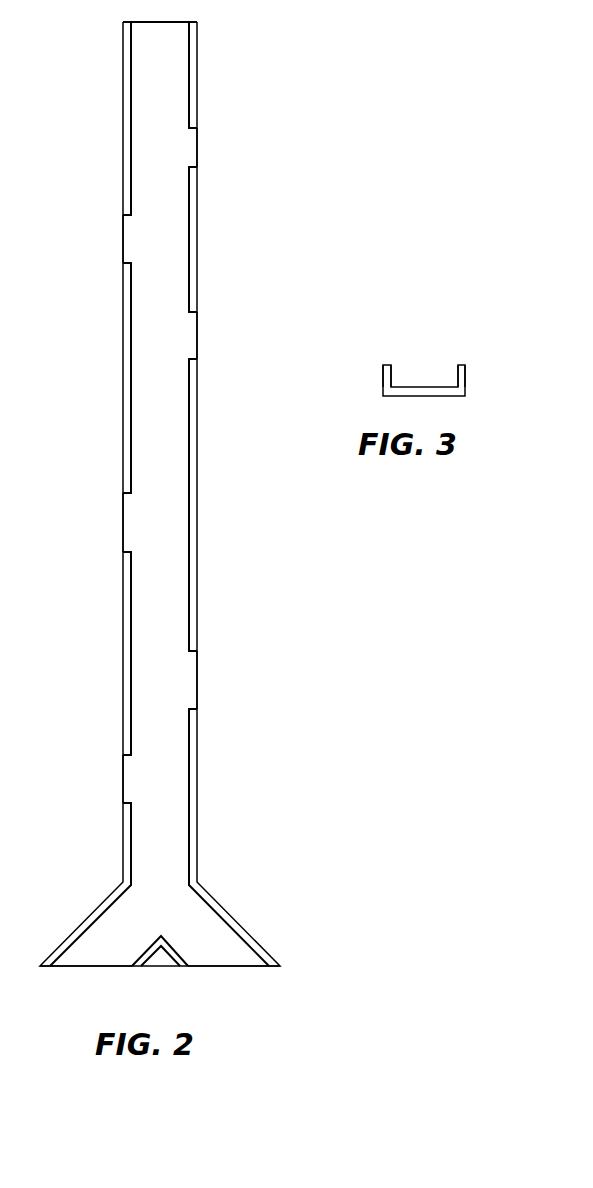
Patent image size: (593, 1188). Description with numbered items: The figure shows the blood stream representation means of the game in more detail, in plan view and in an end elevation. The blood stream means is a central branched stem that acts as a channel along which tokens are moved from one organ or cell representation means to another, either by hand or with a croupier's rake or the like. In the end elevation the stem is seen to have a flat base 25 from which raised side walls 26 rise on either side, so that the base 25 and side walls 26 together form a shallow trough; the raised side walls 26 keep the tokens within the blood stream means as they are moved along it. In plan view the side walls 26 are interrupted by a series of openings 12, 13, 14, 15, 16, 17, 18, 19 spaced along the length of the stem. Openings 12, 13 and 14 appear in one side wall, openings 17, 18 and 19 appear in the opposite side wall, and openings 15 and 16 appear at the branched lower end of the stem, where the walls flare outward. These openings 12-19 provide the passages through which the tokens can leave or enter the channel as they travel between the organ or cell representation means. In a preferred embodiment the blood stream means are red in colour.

In FIG. 2, the opening 12 is at (127, 241).
In FIG. 2, the opening 13 is at (128, 521).
In FIG. 2, the opening 14 is at (128, 783).
In FIG. 2, the opening 15 is at (96, 960).
In FIG. 2, the opening 16 is at (223, 955).
In FIG. 2, the opening 17 is at (190, 680).
In FIG. 2, the opening 18 is at (192, 333).
In FIG. 2, the opening 19 is at (192, 150).
In FIG. 2, the flat base 25 is at (165, 215).
In FIG. 3, the flat base 25 is at (418, 385).
In FIG. 2, the raised side walls 26 is at (126, 422).
In FIG. 3, the raised side walls 26 is at (384, 375).